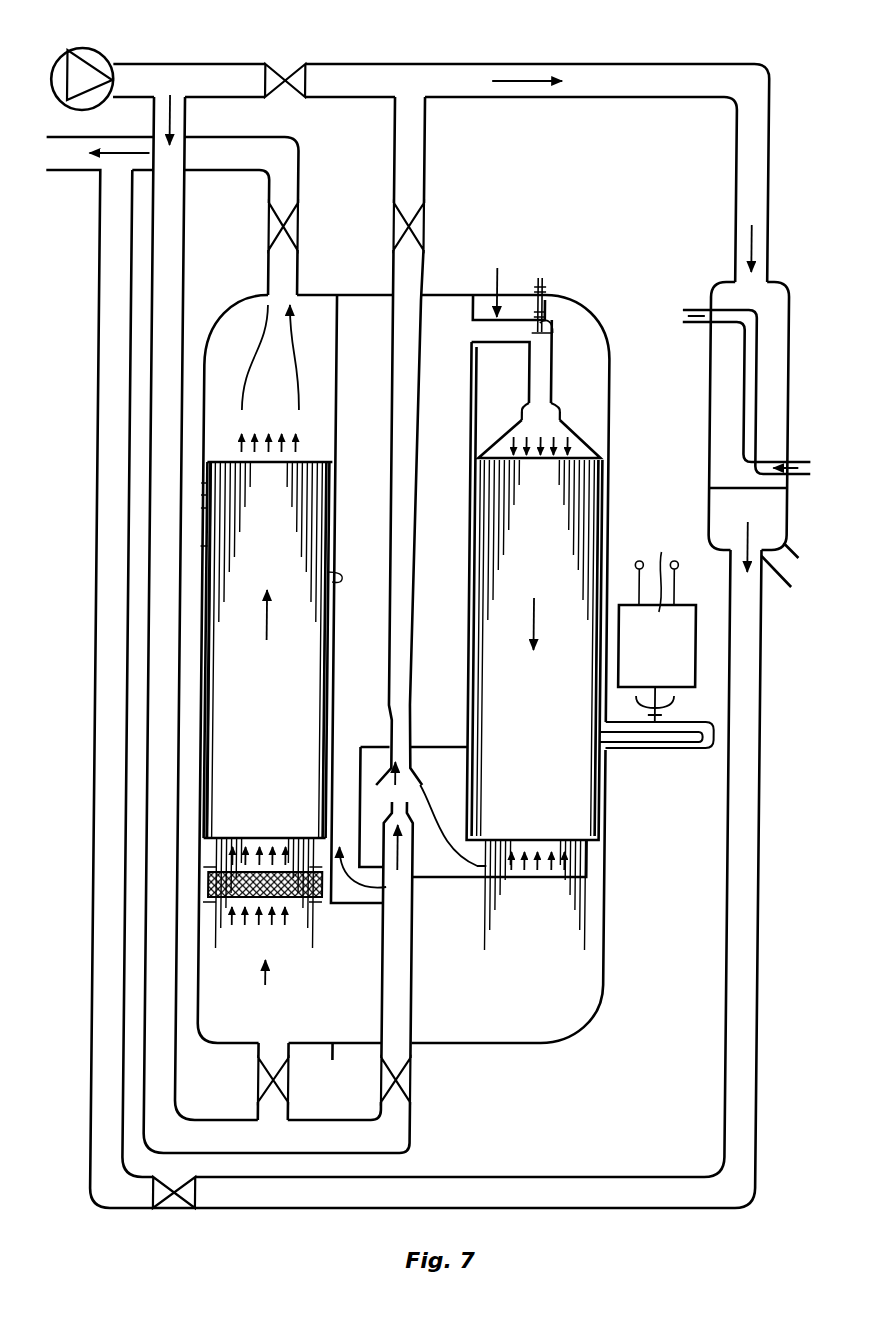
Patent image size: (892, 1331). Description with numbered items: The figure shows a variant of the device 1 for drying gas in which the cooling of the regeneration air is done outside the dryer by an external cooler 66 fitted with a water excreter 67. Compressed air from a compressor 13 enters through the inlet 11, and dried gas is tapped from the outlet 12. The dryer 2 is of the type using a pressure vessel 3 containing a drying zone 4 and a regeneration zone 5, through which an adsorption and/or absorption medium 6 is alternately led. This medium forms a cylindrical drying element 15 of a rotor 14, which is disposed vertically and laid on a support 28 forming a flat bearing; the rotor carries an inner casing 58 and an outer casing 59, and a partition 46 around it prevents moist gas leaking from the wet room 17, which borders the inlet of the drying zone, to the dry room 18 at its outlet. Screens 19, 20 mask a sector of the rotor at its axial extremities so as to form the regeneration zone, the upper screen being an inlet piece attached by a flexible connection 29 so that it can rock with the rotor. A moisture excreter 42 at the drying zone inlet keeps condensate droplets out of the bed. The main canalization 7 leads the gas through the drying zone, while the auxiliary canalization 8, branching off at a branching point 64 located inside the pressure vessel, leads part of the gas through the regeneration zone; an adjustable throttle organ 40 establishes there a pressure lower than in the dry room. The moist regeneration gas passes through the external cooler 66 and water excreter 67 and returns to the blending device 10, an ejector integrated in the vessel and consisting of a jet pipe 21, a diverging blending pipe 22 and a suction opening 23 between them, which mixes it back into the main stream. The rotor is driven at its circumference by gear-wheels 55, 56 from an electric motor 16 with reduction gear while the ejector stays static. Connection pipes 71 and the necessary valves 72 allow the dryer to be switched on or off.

The device for drying gas 1 is at (74, 1165).
The dryer 2 is at (600, 304).
The pressure vessel 3 is at (610, 400).
The drying zone 4 is at (240, 626).
The regeneration zone 5 is at (556, 522).
The adsorption and/or absorption medium 6 is at (553, 797).
The main canalization 7 is at (424, 850).
The auxiliary canalization 8 is at (499, 285).
The blending device 10 is at (428, 735).
The inlet 11 is at (230, 42).
The outlet 12 is at (74, 160).
The compressor 13 is at (104, 56).
The rotor 14 is at (205, 512).
The cylindrical drying element 15 is at (243, 690).
The electric motor 16 is at (657, 608).
The wet room 17 is at (235, 1035).
The dry room 18 is at (228, 293).
The screen 19 is at (575, 444).
The screen 20 is at (556, 885).
The jet pipe 21 is at (393, 803).
The blending pipe 22 is at (393, 657).
The suction opening 23 is at (380, 782).
The support 28 is at (322, 836).
The flexible connection 29 is at (554, 406).
The adjustable throttle organ 40 is at (541, 330).
The moisture excreter 42 is at (212, 876).
The partition 46 is at (205, 488).
The gear-wheel 55 is at (662, 736).
The gear-wheel 56 is at (603, 740).
The inner casing 58 is at (335, 573).
The outer casing 59 is at (208, 548).
The branching point 64 is at (404, 934).
The external cooler 66 is at (712, 386).
The water excreter 67 is at (716, 514).
The connection pipe 71 is at (290, 1113).
The valve 72 is at (290, 88).